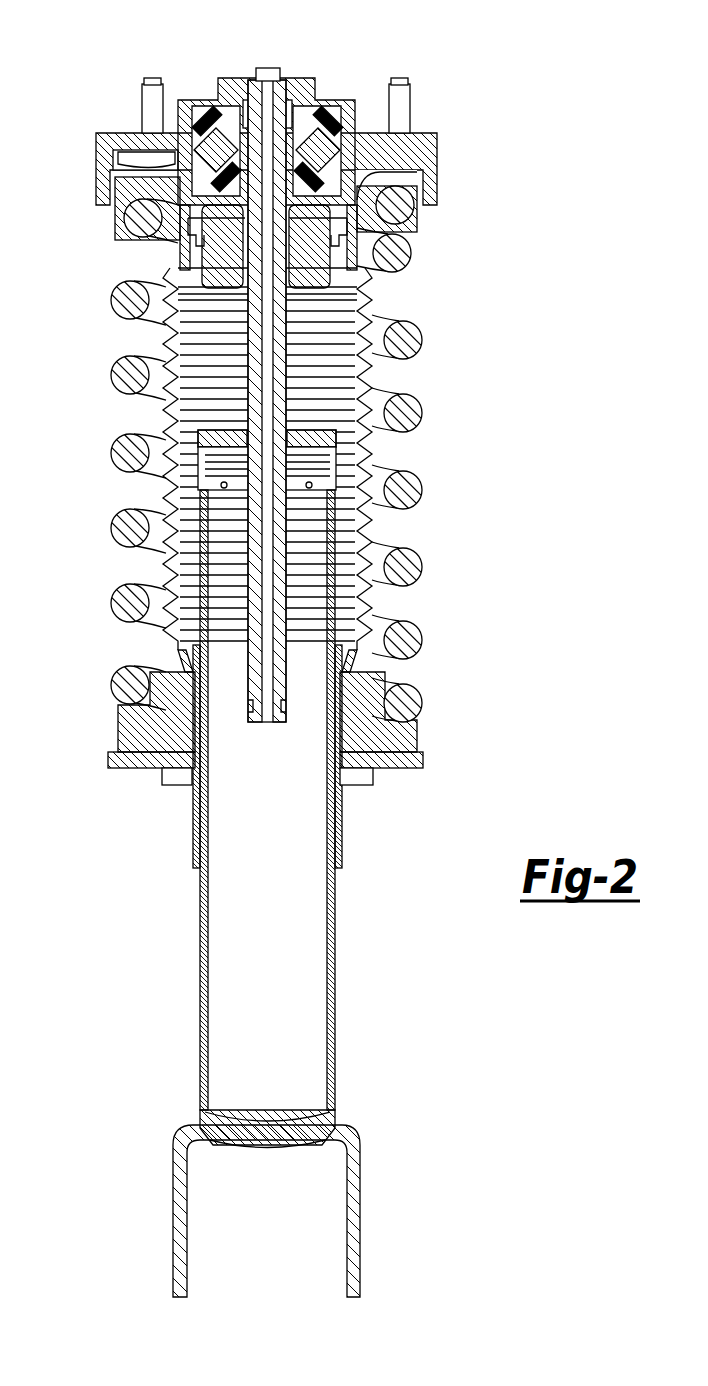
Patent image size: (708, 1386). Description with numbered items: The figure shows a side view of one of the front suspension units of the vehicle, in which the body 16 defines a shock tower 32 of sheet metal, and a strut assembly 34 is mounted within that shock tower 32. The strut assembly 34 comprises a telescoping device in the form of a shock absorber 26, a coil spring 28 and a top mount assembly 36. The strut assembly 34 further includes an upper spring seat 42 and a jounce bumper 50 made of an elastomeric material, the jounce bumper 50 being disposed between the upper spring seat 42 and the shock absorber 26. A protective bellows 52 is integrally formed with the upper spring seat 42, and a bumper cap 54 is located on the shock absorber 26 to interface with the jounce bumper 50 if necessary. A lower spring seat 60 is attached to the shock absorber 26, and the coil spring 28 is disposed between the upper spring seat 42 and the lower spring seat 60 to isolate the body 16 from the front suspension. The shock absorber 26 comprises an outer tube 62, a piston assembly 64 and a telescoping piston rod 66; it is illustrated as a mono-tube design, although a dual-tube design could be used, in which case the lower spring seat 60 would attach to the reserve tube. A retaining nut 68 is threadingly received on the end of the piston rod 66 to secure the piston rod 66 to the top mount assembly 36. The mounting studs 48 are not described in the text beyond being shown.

The body 16 is at (292, 136).
The shock absorber 26 is at (287, 682).
The coil spring 28 is at (113, 458).
The shock tower 32 is at (432, 180).
The strut assembly 34 is at (302, 649).
The top mount assembly 36 is at (188, 98).
The upper spring seat 42 is at (131, 191).
The mounting studs 48 is at (150, 108).
The jounce bumper 50 is at (320, 262).
The protective bellows 52 is at (366, 443).
The bumper cap 54 is at (190, 432).
The lower spring seat 60 is at (138, 762).
The outer tube 62 is at (330, 993).
The piston assembly 64 is at (237, 477).
The piston rod 66 is at (247, 678).
The retaining nut 68 is at (246, 116).